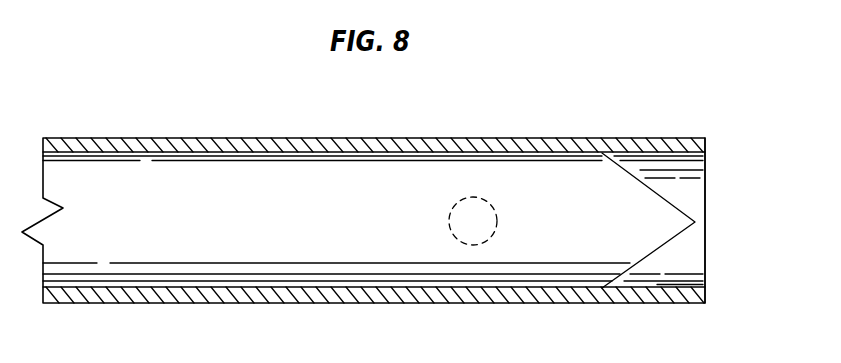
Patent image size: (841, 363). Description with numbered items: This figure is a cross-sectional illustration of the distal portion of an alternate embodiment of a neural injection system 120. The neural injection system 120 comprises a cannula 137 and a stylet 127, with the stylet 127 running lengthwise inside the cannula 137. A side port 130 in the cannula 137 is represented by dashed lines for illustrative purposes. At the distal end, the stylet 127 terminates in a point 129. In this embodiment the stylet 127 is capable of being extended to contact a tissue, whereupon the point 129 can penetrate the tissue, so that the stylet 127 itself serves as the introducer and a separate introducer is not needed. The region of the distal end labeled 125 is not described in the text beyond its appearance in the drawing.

The neural injection system 120 is at (533, 126).
The distal end 125 is at (716, 183).
The stylet 127 is at (257, 200).
The point 129 is at (695, 222).
The side port 130 is at (463, 209).
The cannula 137 is at (310, 146).